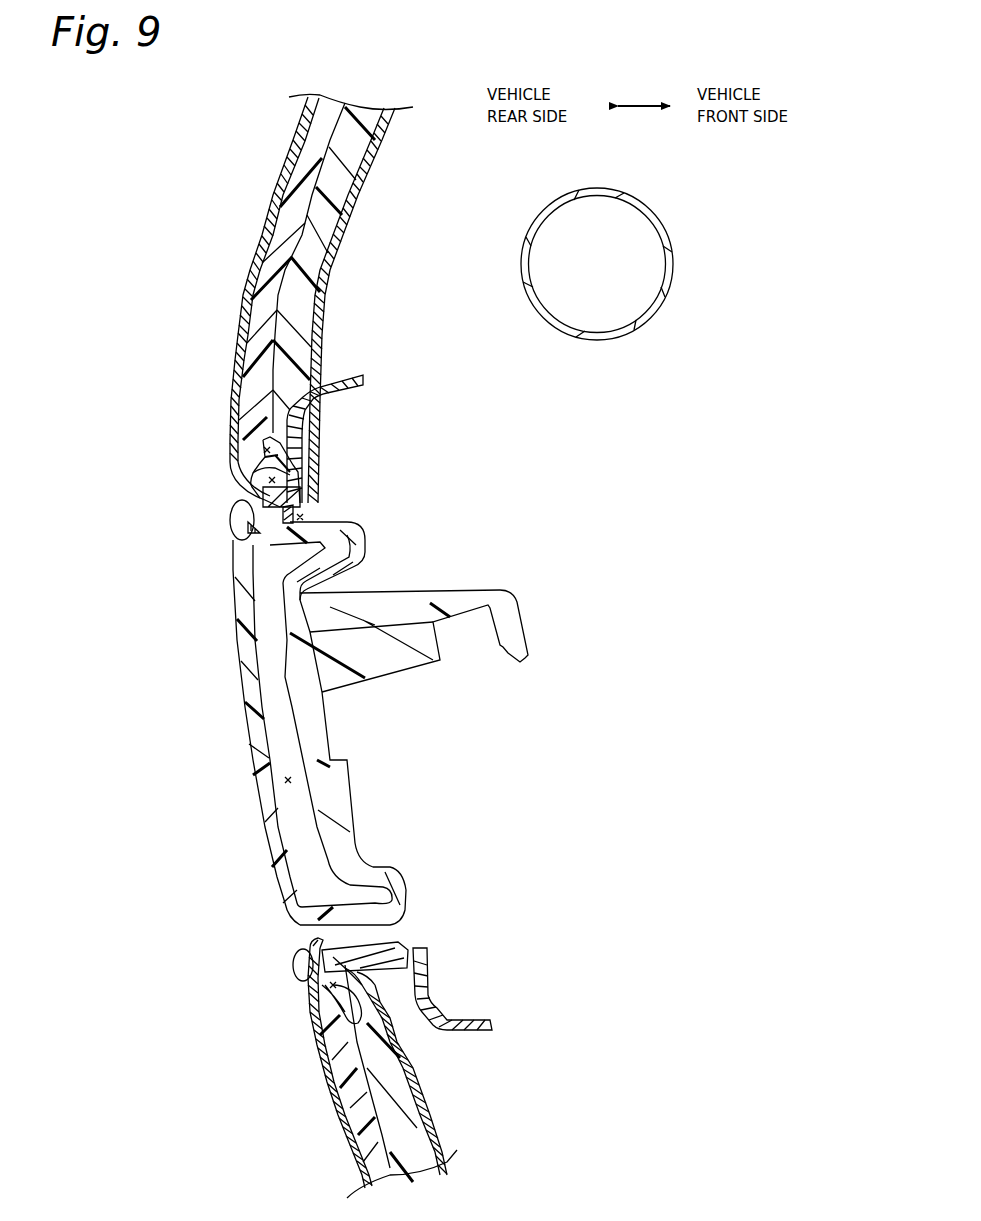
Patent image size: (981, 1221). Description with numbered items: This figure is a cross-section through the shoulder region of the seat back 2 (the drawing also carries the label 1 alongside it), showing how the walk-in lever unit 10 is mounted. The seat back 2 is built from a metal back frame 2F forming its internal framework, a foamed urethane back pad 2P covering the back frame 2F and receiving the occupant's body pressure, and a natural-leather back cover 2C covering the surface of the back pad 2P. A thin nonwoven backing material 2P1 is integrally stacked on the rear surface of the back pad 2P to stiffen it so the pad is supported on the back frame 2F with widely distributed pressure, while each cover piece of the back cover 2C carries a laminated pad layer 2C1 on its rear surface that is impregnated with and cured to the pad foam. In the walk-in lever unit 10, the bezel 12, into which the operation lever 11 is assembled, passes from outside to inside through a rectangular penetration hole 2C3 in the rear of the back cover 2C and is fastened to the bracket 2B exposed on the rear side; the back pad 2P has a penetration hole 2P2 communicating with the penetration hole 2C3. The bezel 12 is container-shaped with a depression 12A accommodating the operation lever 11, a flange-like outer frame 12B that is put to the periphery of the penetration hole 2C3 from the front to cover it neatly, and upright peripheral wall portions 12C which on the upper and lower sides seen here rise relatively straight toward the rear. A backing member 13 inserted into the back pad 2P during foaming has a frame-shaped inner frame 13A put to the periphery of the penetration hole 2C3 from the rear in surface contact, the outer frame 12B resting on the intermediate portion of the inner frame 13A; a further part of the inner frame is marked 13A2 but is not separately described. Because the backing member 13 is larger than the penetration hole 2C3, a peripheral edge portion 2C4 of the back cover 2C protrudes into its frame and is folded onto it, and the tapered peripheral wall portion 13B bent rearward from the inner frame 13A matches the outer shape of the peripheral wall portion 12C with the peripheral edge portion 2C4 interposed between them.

The vehicle 1 is at (274, 308).
The seat back 2 is at (190, 165).
The back pad 2P is at (332, 229).
The backing material 2P1 is at (338, 271).
The penetration hole 2P2 is at (307, 517).
The back cover 2C is at (240, 316).
The laminated pad layer 2C1 is at (268, 268).
The penetration hole 2C3 is at (253, 528).
The peripheral edge portion 2C4 is at (280, 540).
The bracket 2B is at (320, 469).
The back frame 2F is at (657, 222).
The walk-in lever unit 10 is at (185, 729).
The operation lever 11 is at (255, 798).
The bezel 12 is at (341, 808).
The depression 12A is at (292, 779).
The outer frame 12B is at (240, 517).
The peripheral wall portion 12C is at (332, 548).
The backing member 13 is at (265, 452).
The inner frame 13A is at (262, 466).
The clip engaging tip 13A2 is at (270, 484).
The peripheral wall portion 13B is at (305, 497).